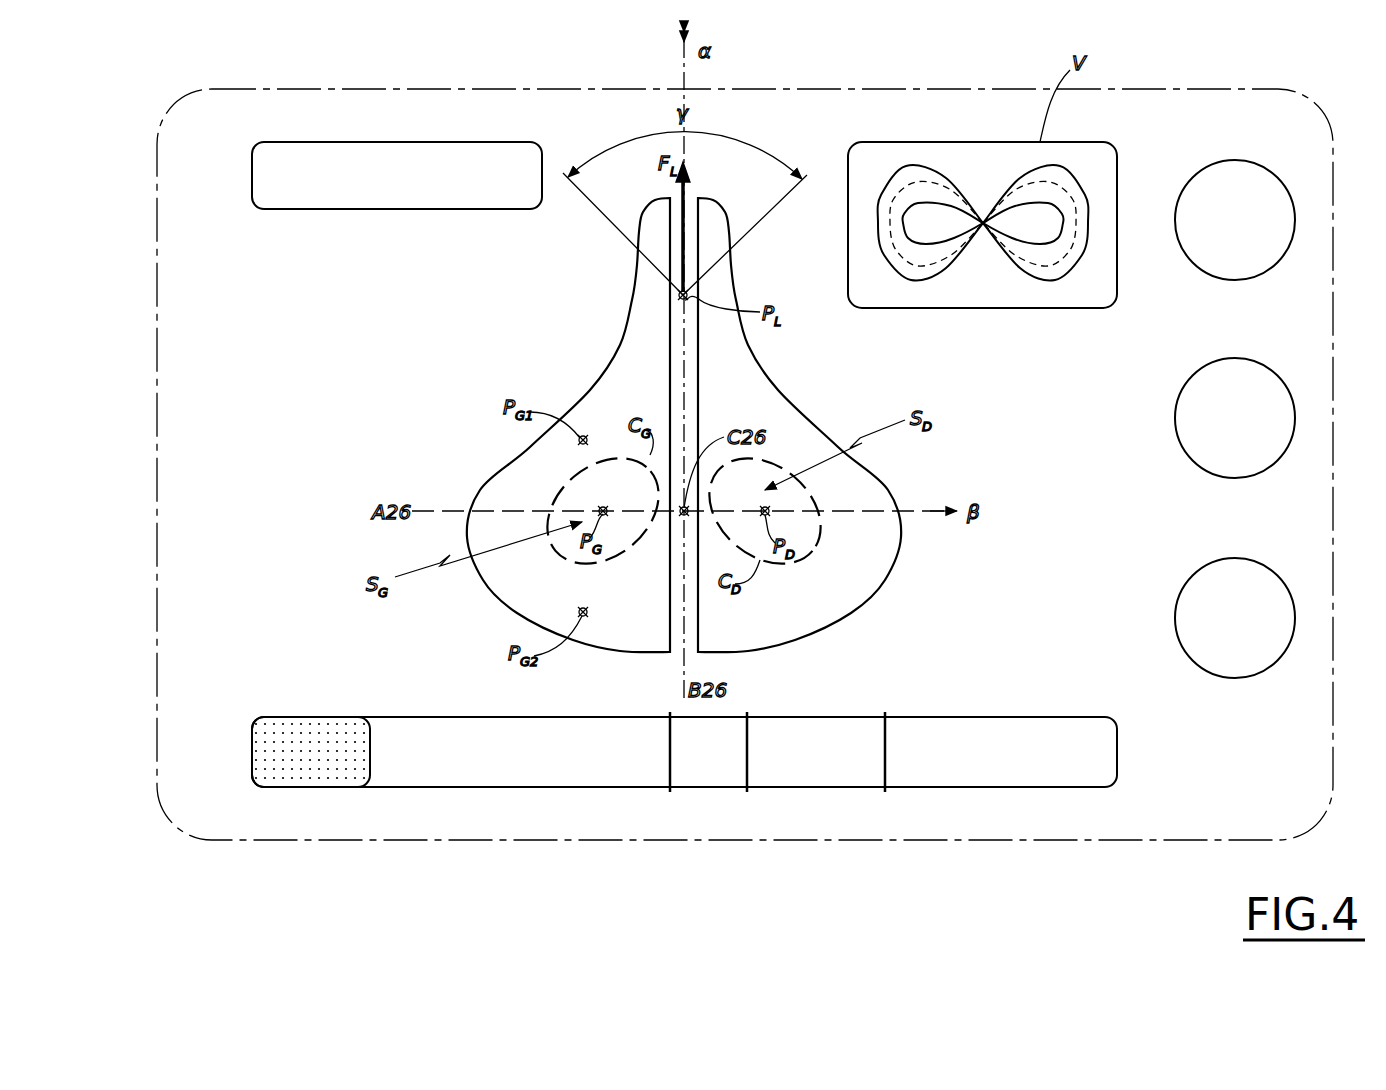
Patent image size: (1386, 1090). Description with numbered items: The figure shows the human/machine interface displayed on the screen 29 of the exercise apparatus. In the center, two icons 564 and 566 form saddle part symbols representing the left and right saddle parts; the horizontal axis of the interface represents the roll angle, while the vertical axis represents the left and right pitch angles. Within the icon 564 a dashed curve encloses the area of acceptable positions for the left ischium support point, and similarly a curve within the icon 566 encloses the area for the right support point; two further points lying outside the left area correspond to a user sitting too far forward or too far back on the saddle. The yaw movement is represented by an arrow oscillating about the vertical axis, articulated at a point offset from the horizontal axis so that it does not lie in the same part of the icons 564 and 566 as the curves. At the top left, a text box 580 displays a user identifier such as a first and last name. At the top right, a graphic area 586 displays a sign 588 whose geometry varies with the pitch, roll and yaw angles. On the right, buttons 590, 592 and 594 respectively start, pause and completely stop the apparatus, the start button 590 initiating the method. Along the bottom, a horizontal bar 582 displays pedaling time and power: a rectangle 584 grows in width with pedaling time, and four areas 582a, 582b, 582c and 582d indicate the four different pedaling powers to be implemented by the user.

The screen 29 is at (1200, 130).
The text box 580 is at (397, 175).
The horizontal bar 582 is at (1122, 750).
The area 582a is at (481, 765).
The area 582b is at (690, 765).
The area 582c is at (862, 765).
The area 582d is at (1066, 765).
The rectangle 584 is at (311, 752).
The graphic area 586 is at (955, 150).
The sign 588 is at (1045, 282).
The start button 590 is at (1235, 220).
The pause button 592 is at (1235, 418).
The stop button 594 is at (1235, 618).
The icon 564 is at (630, 345).
The icon 566 is at (783, 432).